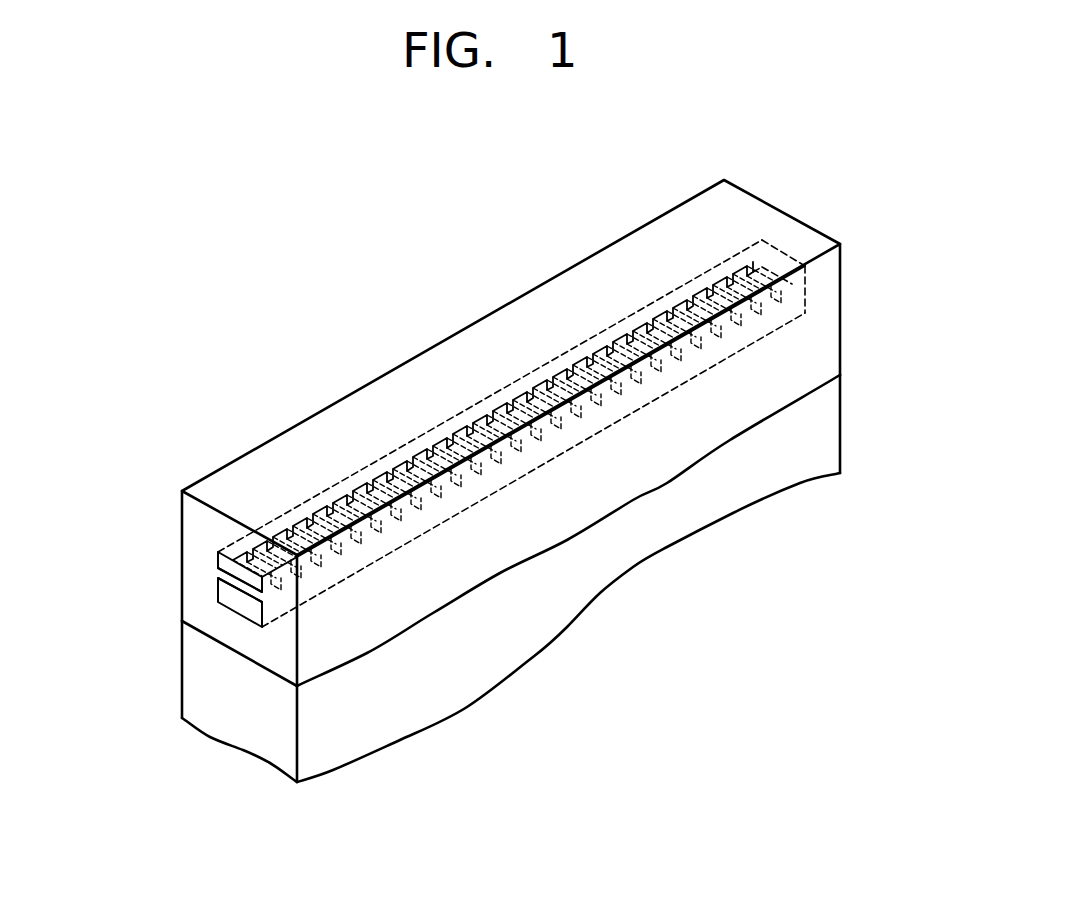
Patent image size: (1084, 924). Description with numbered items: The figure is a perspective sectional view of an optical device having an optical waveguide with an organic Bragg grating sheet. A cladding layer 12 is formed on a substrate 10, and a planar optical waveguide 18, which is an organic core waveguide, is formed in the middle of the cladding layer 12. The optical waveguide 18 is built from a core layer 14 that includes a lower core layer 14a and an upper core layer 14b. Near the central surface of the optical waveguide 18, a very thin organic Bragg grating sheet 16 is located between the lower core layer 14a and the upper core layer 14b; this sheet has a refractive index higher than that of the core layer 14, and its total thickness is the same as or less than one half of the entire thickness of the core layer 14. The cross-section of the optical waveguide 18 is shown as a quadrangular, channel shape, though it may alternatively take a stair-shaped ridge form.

The substrate 10 is at (235, 735).
The cladding layer 12 is at (187, 505).
The core layer 14 is at (907, 285).
The lower core layer 14a is at (219, 592).
The upper core layer 14b is at (219, 555).
The organic Bragg grating sheet 16 is at (221, 577).
The planar optical waveguide 18 is at (93, 525).